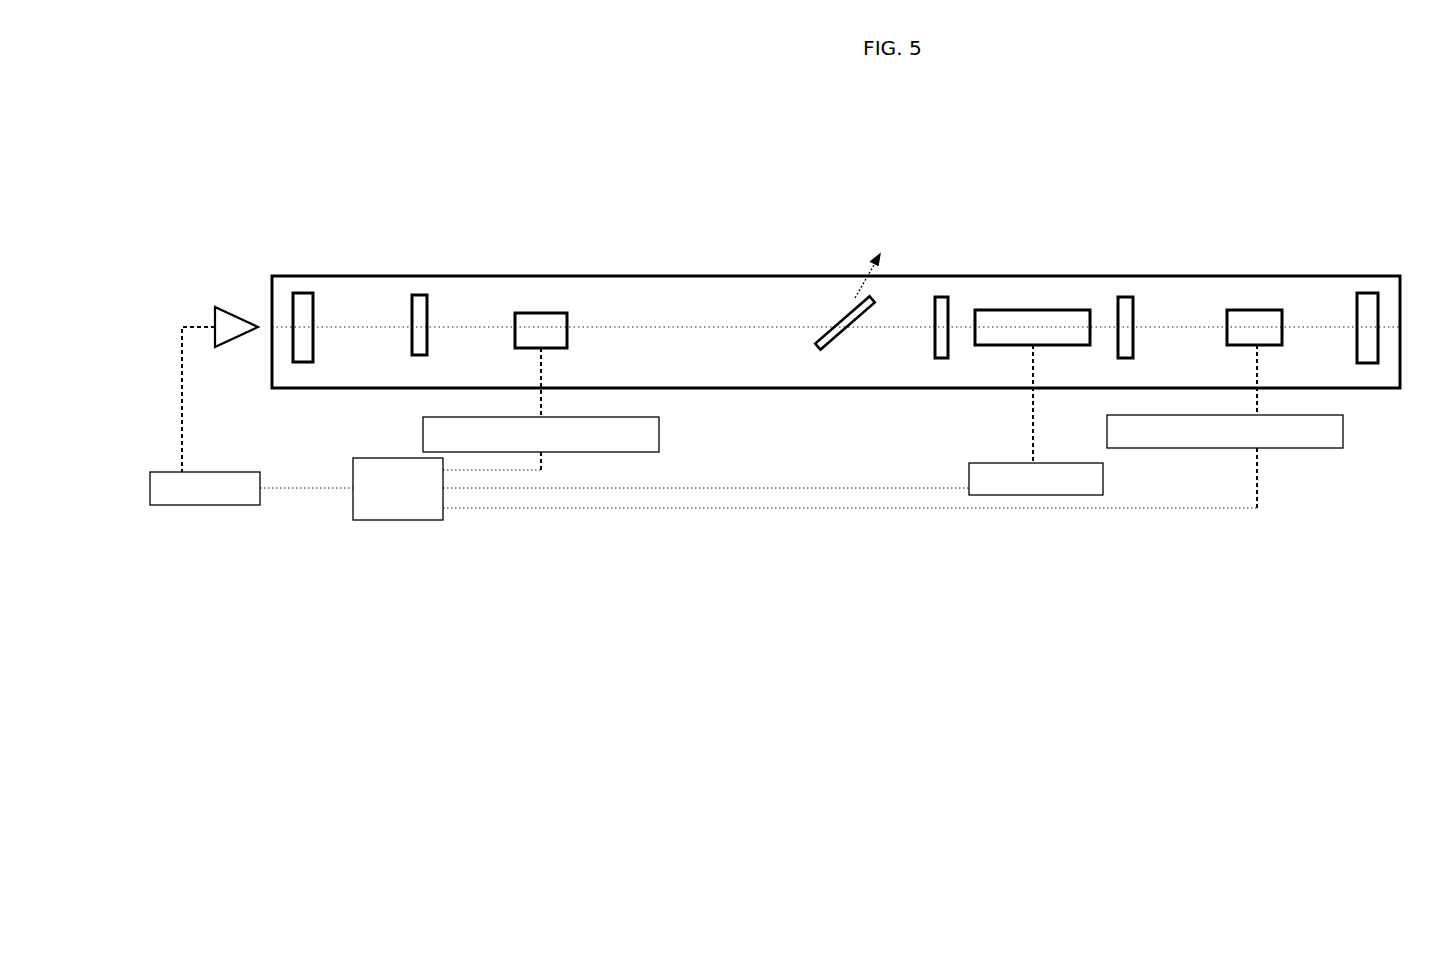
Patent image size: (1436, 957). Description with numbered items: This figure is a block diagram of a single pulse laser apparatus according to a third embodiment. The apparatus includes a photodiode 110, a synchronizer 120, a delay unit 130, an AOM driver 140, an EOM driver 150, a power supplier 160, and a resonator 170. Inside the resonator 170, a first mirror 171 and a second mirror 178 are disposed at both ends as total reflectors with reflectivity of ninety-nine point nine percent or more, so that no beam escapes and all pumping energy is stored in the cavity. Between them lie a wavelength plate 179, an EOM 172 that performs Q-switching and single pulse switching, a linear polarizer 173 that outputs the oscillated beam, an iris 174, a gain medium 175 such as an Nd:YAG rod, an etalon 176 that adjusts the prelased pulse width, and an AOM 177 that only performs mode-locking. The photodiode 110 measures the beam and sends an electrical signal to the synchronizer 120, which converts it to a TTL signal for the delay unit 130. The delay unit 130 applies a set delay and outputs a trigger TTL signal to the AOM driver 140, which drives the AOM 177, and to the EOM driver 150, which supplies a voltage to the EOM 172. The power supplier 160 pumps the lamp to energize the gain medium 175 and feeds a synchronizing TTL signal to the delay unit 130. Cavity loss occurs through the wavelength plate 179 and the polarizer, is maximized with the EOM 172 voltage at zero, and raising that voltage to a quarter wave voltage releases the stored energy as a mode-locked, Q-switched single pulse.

The photodiode 110 is at (230, 345).
The synchronizer 120 is at (205, 507).
The delay unit 130 is at (405, 522).
The AOM driver 140 is at (1285, 450).
The EOM driver 150 is at (659, 430).
The power supplier 160 is at (1035, 497).
The resonator 170 is at (1398, 388).
The first mirror 171 is at (293, 292).
The EOM 172 is at (541, 313).
The linear polarizer 173 is at (843, 313).
The iris 174 is at (937, 297).
The gain medium 175 is at (1028, 310).
The etalon 176 is at (1120, 297).
The AOM 177 is at (1252, 310).
The second mirror 178 is at (1362, 293).
The wavelength plate 179 is at (414, 294).